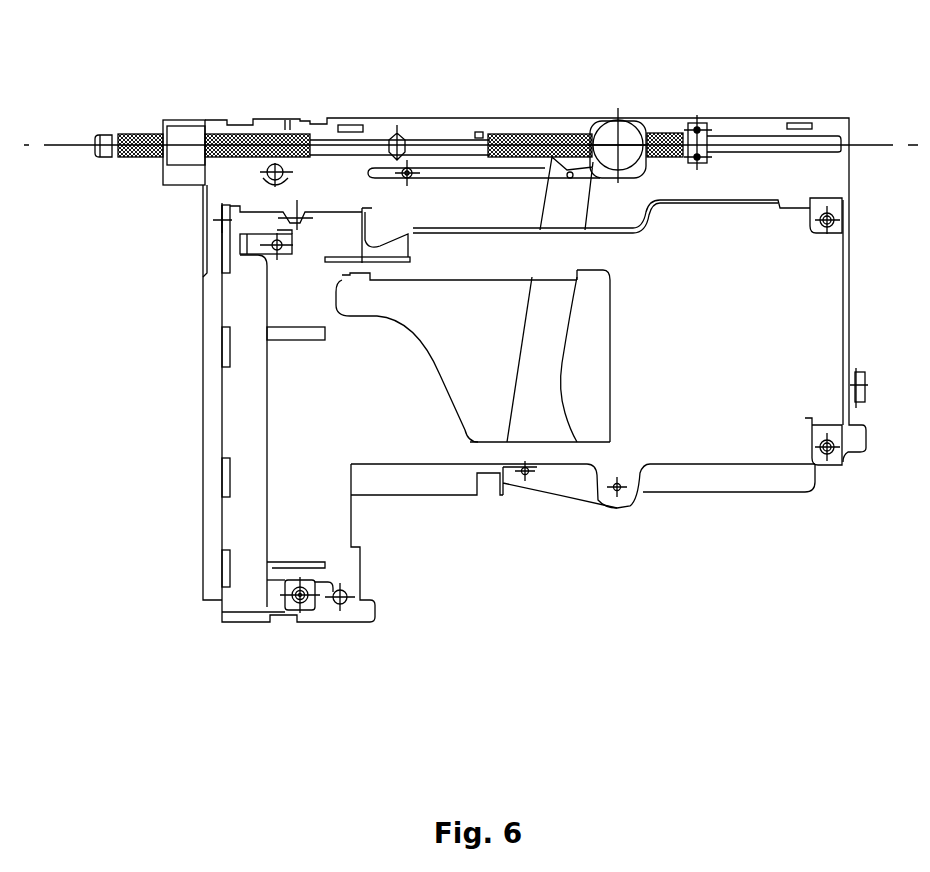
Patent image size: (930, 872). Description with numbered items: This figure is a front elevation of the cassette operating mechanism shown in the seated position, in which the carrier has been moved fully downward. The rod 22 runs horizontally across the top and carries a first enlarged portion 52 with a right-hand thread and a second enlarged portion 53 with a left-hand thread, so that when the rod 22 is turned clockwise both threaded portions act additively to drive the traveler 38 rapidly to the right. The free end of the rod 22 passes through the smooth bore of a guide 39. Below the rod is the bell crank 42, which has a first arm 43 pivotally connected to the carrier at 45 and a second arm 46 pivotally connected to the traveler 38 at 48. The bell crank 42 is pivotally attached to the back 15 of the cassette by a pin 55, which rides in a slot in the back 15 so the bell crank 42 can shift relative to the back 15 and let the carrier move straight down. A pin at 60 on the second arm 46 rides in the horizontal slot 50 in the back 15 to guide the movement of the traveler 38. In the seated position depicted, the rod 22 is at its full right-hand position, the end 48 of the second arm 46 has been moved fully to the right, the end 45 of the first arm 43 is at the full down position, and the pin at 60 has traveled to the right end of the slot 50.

The back 15 is at (828, 112).
The rod 22 is at (444, 135).
The traveler 38 is at (628, 131).
The guide 39 is at (702, 128).
The bell crank 42 is at (530, 385).
The first arm 43 is at (568, 485).
The pivotal connection of first arm to carrier 45 is at (617, 488).
The second arm 46 is at (548, 313).
The pivotal connection of second arm to traveler 48 is at (577, 118).
The horizontal slot 50 is at (470, 175).
The first enlarged portion 52 is at (141, 128).
The second enlarged portion 53 is at (520, 135).
The pin 55 is at (528, 472).
The pin of second arm 60 is at (575, 178).